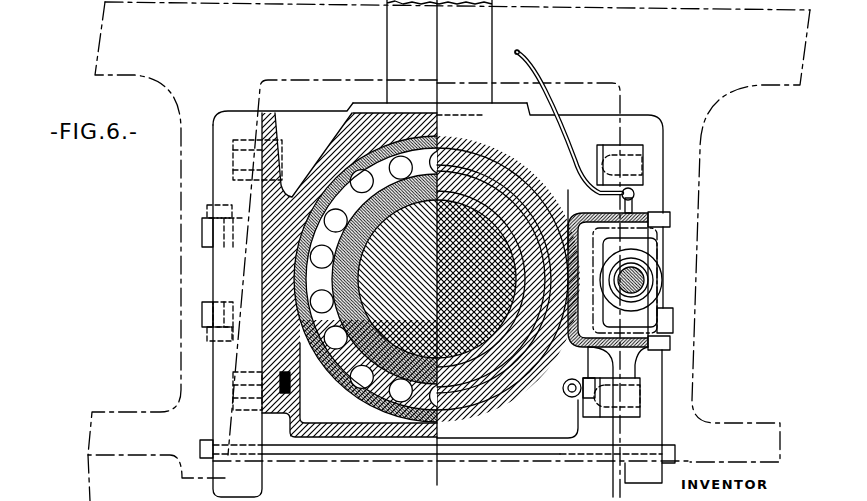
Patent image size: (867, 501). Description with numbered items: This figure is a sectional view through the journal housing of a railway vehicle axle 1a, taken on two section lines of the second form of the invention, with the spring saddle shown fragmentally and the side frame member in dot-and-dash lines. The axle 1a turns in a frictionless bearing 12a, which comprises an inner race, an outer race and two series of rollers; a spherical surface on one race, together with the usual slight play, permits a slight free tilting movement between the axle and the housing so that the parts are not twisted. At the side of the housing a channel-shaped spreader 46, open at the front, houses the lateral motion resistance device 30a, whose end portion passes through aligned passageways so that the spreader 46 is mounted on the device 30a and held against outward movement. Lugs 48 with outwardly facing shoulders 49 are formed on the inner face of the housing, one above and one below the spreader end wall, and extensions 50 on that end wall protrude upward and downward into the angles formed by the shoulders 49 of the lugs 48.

The axle 1a is at (475, 330).
The frictionless bearing 12a is at (385, 381).
The lateral motion resistance device 30a is at (660, 277).
The spreader 46 is at (633, 199).
The lugs 48 is at (633, 146).
The outwardly facing shoulders 49 is at (600, 153).
The extensions 50 is at (636, 363).